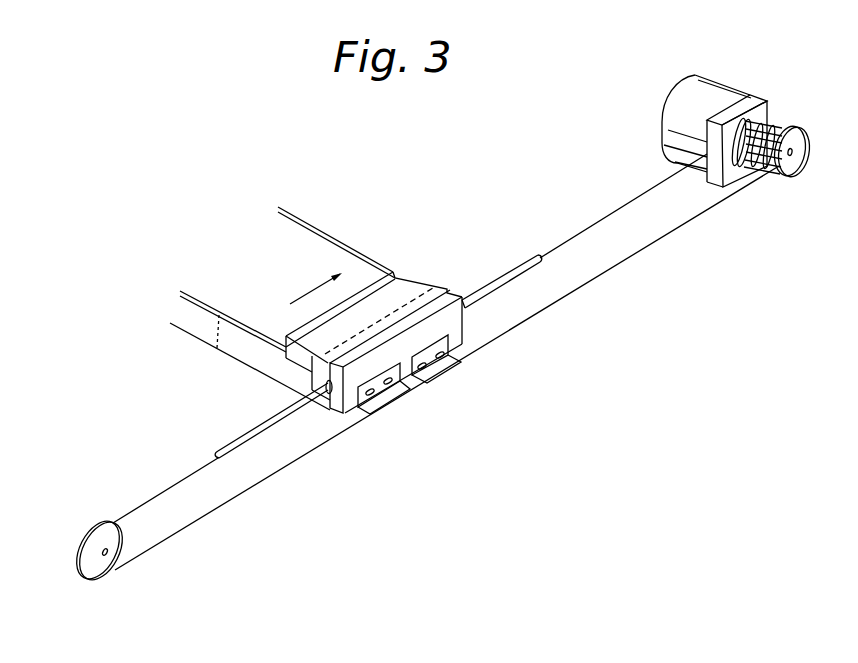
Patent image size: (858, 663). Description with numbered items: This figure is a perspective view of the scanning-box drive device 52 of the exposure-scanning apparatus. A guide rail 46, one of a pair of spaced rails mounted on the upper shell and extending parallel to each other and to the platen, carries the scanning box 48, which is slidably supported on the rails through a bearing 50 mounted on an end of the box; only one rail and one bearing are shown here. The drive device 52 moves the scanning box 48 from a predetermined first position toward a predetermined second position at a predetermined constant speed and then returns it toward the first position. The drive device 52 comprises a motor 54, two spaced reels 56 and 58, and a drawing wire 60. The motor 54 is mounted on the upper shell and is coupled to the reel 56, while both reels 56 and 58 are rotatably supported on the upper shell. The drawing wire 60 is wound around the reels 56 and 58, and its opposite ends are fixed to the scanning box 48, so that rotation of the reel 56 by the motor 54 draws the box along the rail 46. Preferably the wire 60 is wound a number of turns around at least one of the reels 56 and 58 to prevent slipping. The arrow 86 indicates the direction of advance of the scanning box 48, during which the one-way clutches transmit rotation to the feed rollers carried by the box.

The guide rail 46 is at (505, 270).
The scanning box 48 is at (253, 352).
The bearing 50 is at (330, 396).
The scanning-box drive device 52 is at (778, 103).
The motor 54 is at (690, 95).
The reel 56 is at (803, 162).
The reel 58 is at (103, 568).
The drawing wire 60 is at (618, 260).
The arrow direction 86 is at (301, 294).